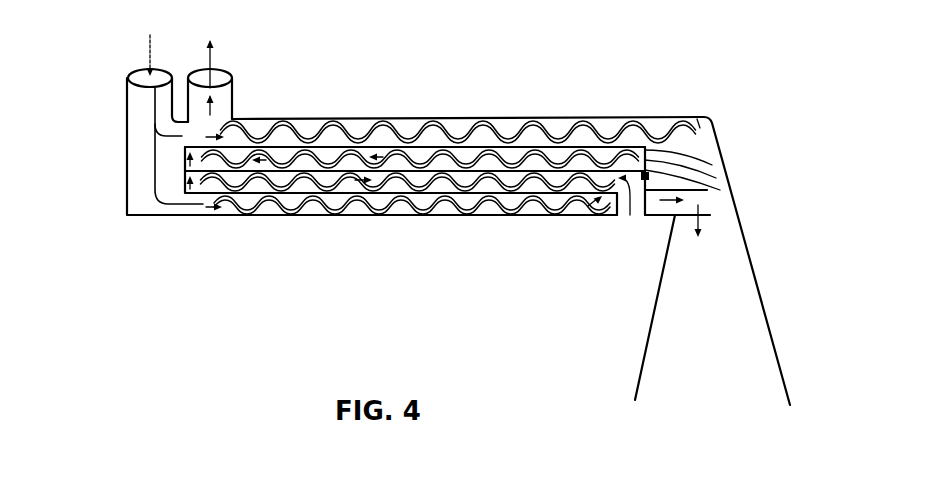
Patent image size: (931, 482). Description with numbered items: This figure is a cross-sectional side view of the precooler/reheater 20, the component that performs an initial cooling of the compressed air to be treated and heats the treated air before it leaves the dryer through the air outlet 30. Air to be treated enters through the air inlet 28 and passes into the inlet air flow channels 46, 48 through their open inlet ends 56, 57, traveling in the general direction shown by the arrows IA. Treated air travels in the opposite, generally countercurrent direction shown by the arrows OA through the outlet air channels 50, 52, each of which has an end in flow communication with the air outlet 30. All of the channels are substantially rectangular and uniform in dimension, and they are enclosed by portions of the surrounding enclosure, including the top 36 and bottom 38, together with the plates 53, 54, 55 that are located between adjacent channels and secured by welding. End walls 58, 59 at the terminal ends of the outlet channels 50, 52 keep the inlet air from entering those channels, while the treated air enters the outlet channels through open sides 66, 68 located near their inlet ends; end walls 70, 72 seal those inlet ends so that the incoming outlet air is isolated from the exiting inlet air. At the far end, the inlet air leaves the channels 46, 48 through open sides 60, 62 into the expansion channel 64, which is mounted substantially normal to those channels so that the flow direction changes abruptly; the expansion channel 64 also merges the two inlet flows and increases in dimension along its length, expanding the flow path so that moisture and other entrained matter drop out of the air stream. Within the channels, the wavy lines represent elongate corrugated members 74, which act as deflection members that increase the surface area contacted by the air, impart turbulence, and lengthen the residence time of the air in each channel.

The precooler/reheater 20 is at (397, 100).
The air inlet 28 is at (125, 100).
The air outlet 30 is at (228, 98).
The top 36 is at (505, 128).
The bottom 38 is at (462, 215).
The inlet air flow channel 46 is at (258, 128).
The inlet air flow channel 48 is at (263, 210).
The outlet air channel 50 is at (347, 120).
The outlet air channel 52 is at (350, 213).
The plate 53 is at (548, 128).
The plate 54 is at (555, 208).
The plate 55 is at (407, 197).
The inlet end 56 is at (176, 143).
The inlet end 57 is at (182, 208).
The end wall 58 is at (183, 171).
The end wall 59 is at (185, 188).
The open side 60 is at (694, 126).
The open side 62 is at (700, 198).
The expansion channel 64 is at (752, 357).
The open side 66 is at (714, 120).
The open side 68 is at (650, 178).
The end wall 70 is at (713, 145).
The end wall 72 is at (655, 190).
The corrugated member 74 is at (316, 135).
The inlet air arrows IA is at (152, 55).
The outlet air arrows OA is at (212, 52).